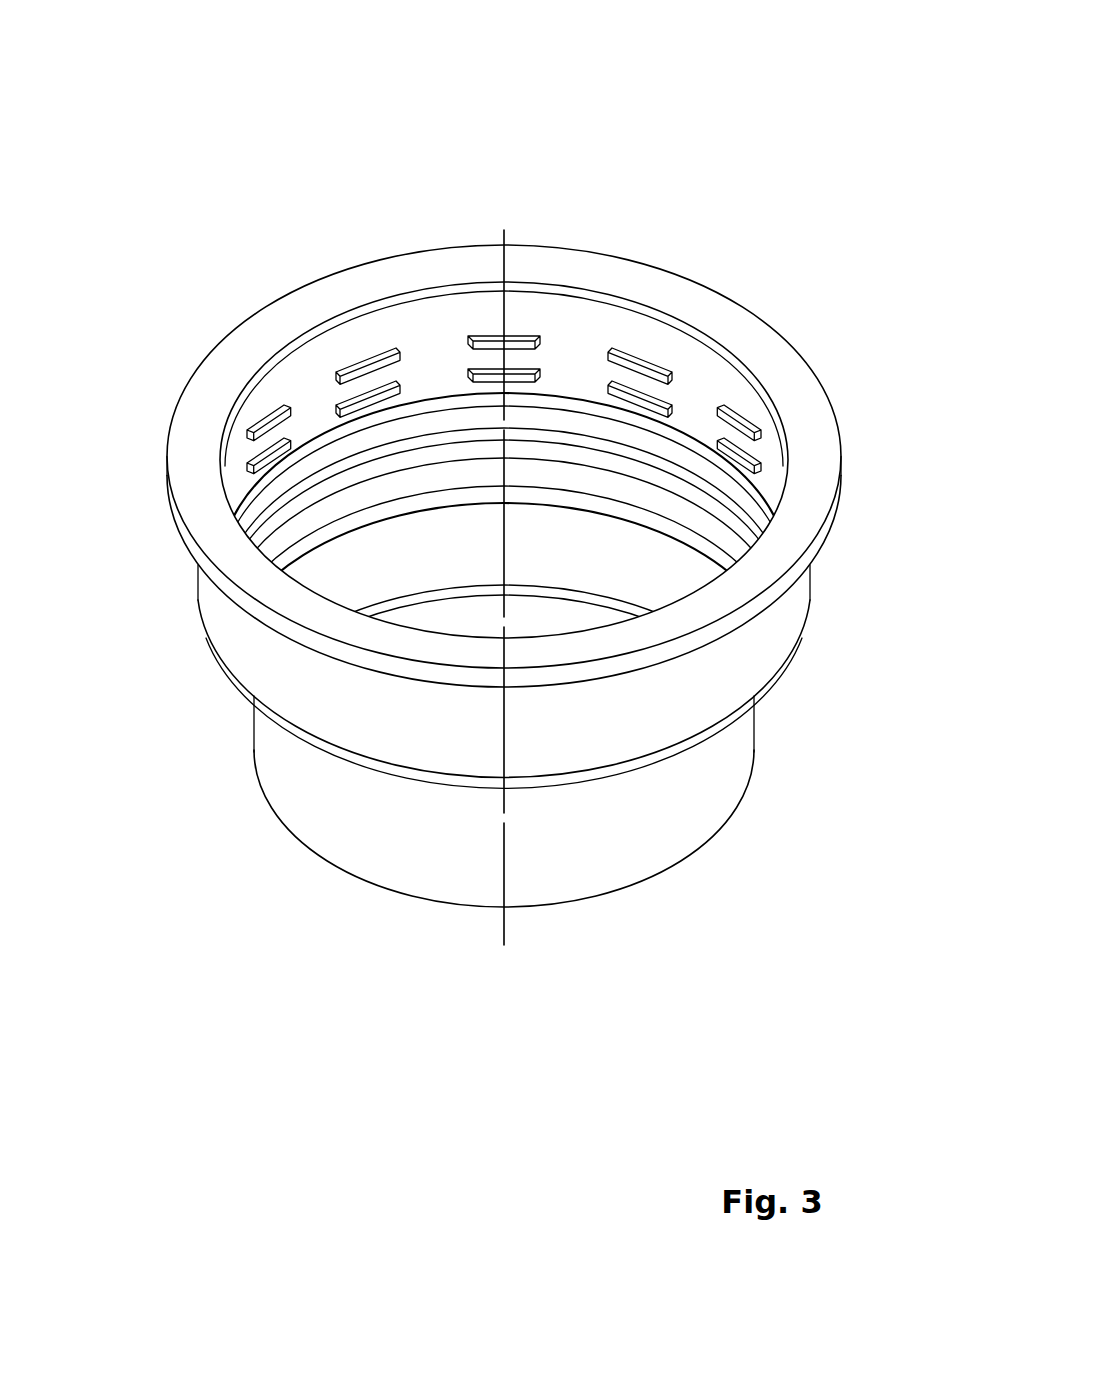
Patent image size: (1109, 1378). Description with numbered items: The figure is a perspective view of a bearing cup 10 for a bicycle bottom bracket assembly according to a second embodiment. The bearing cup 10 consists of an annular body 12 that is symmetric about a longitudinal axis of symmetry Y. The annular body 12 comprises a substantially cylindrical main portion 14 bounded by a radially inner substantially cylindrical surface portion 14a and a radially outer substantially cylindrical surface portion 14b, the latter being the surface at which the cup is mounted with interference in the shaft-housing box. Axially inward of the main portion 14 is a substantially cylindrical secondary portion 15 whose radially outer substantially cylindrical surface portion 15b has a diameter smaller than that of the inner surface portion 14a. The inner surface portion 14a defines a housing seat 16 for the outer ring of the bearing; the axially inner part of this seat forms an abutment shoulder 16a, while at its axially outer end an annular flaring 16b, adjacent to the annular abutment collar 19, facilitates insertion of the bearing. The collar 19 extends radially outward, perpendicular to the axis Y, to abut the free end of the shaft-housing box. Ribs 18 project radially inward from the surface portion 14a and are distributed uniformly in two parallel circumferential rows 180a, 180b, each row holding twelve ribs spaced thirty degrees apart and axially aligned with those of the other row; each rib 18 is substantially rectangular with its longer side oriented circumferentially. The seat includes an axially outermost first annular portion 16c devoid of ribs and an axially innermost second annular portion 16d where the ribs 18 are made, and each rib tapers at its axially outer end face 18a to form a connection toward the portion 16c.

The bearing cup 10 is at (291, 186).
The annular body 12 is at (151, 539).
The substantially cylindrical main portion 14 is at (208, 618).
The radially inner substantially cylindrical surface portion 14a is at (302, 365).
The radially outer substantially cylindrical surface portion 14b is at (317, 707).
The substantially cylindrical secondary portion 15 is at (733, 753).
The radially outer substantially cylindrical surface portion 15b is at (397, 822).
The housing seat 16 is at (295, 403).
The abutment shoulder 16a is at (255, 505).
The annular flaring 16b is at (685, 323).
The axially outermost first annular portion 16c is at (398, 318).
The axially innermost second annular portion 16d is at (430, 358).
The ribs 18 is at (263, 422).
The axially outer end face 18a is at (508, 335).
The circumferential row 180a is at (681, 358).
The circumferential row 180b is at (679, 404).
The annular abutment collar 19 is at (706, 301).
The longitudinal axis of symmetry Y is at (504, 931).